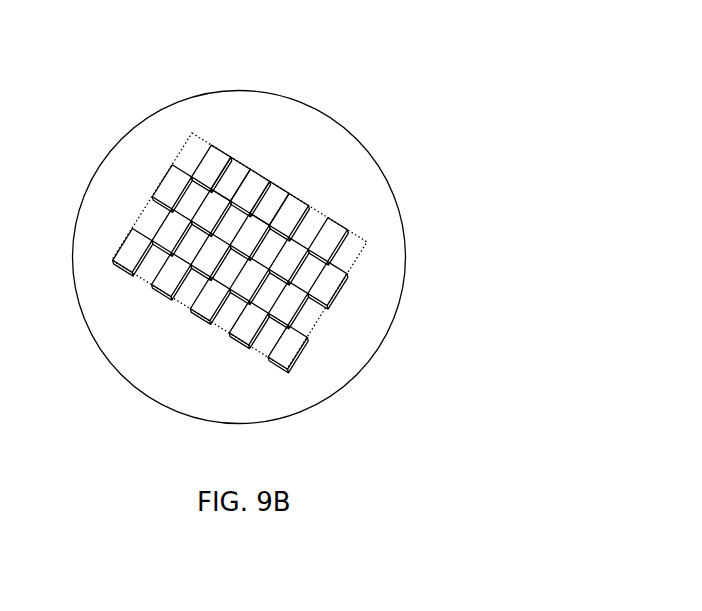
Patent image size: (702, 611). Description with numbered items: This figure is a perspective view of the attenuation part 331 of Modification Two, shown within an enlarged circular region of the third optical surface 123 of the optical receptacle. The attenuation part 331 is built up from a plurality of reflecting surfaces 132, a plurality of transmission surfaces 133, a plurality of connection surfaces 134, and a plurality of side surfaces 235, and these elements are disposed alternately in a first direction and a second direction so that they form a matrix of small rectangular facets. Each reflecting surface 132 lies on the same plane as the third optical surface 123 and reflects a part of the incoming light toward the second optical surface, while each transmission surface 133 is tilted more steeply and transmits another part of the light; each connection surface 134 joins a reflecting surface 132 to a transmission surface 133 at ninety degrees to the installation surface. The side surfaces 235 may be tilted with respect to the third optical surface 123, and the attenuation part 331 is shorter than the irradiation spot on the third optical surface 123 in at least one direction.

The connection surface 134 is at (228, 174).
The reflecting surface 132 is at (248, 184).
The transmission surface 133 is at (265, 200).
The side surface 235 is at (273, 212).
The attenuation part 331 is at (334, 210).
The third optical surface 123 is at (380, 288).